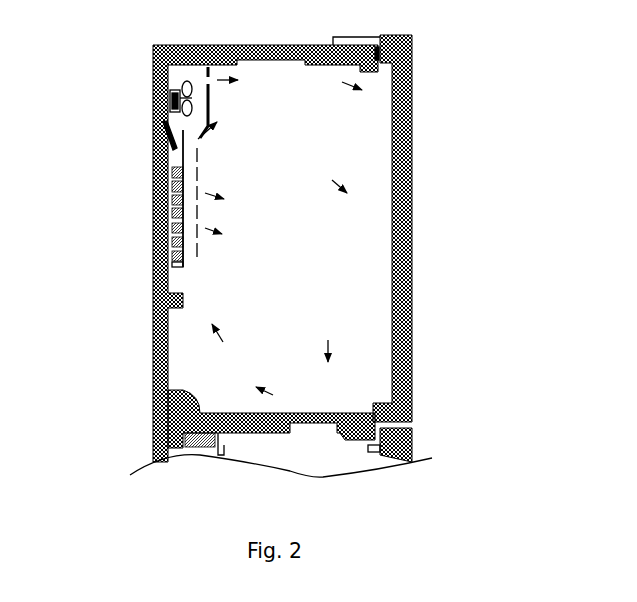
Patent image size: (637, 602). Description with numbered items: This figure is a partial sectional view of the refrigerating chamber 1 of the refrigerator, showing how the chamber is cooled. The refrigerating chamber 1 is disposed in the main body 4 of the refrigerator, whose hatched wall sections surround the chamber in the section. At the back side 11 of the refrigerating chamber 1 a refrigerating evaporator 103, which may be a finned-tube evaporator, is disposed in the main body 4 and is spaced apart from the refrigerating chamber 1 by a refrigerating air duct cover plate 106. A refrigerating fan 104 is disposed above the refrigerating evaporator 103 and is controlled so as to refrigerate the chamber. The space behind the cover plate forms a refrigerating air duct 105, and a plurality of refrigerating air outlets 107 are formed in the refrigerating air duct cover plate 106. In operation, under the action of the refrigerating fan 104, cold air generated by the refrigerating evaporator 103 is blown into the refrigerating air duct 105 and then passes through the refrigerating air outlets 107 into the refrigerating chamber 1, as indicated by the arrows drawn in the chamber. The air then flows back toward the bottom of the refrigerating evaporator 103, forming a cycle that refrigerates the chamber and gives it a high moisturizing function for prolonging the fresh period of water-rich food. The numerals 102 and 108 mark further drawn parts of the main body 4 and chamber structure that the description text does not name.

The refrigerating chamber 1 is at (372, 355).
The main body 4 is at (153, 438).
The back side 11 is at (173, 150).
The door 102 is at (412, 178).
The refrigerating evaporator 103 is at (170, 212).
The refrigerating fan 104 is at (156, 109).
The refrigerating air duct 105 is at (190, 251).
The refrigerating air duct cover plate 106 is at (192, 181).
The refrigerating air outlets 107 is at (153, 348).
The bottom plate 108 is at (245, 418).